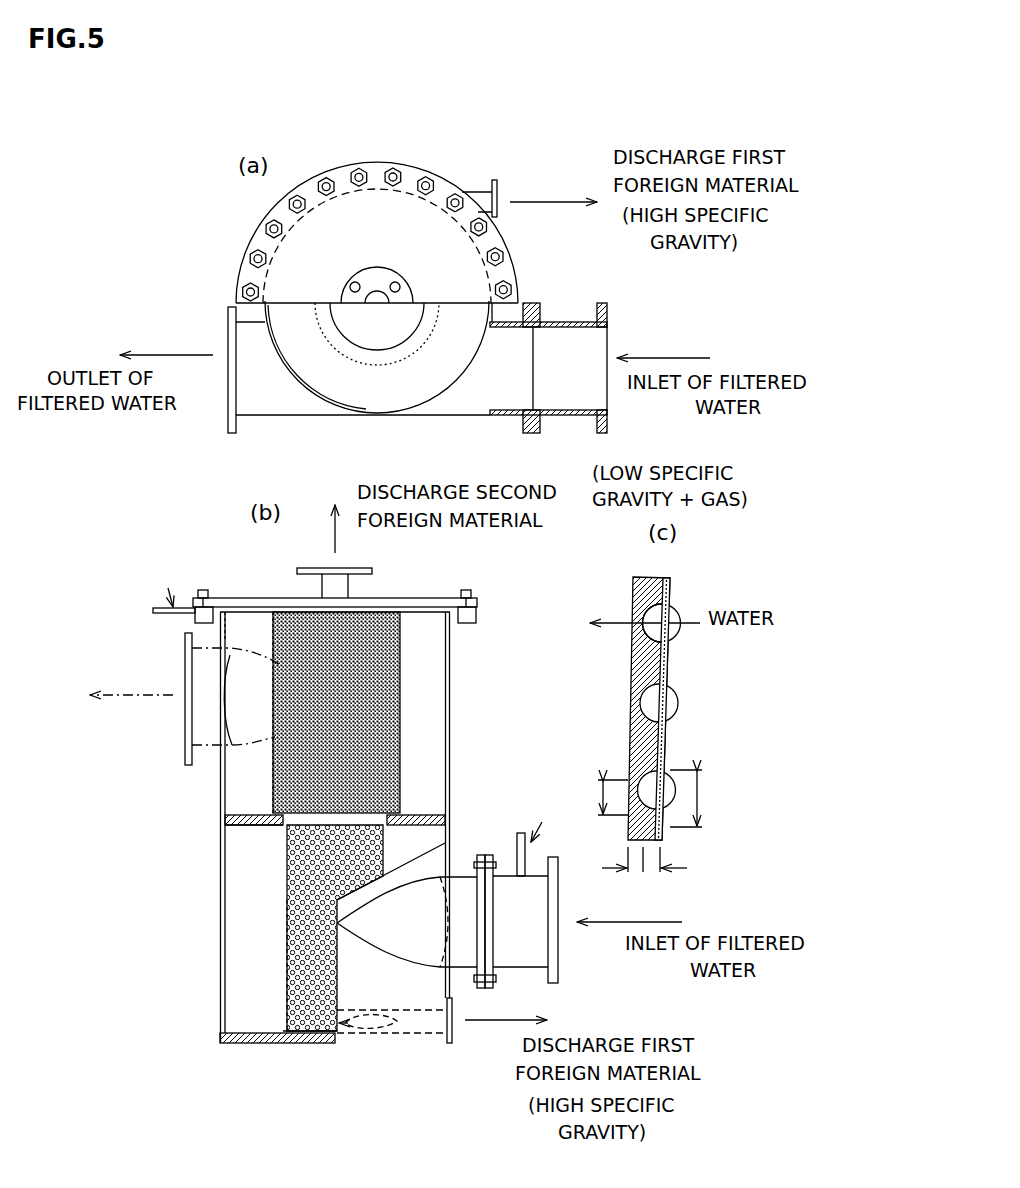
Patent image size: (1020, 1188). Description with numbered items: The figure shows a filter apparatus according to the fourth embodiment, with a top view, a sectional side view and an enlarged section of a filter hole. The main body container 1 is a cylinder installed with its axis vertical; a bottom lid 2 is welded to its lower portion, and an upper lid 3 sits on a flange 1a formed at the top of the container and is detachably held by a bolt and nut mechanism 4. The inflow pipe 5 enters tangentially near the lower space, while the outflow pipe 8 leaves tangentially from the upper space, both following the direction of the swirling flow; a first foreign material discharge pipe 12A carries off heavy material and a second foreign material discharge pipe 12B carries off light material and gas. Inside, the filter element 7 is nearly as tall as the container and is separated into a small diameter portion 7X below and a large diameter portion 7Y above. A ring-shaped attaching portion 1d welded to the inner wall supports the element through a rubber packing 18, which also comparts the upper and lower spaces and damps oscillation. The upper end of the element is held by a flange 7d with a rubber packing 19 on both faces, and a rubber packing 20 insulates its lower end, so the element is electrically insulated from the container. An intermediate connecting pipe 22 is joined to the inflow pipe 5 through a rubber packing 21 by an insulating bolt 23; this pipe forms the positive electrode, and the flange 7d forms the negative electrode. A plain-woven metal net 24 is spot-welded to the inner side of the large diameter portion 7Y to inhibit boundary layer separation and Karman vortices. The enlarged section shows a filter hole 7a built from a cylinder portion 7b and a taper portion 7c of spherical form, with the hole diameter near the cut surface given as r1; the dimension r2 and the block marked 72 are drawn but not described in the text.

The main body container 1 is at (213, 1007).
The flange 1a is at (477, 613).
The attaching portion 1d is at (240, 828).
The bottom lid 2 is at (257, 1045).
The upper lid 3 is at (253, 598).
The bolt and nut mechanism 4 is at (420, 172).
The inflow pipe 5 is at (505, 416).
The filter element 7 is at (434, 345).
The filter hole 7a is at (627, 705).
The cylinder portion 7b is at (614, 856).
The taper portion 7c is at (680, 856).
The flange 7d is at (225, 602).
The small diameter portion 7X is at (281, 943).
The large diameter portion 7Y is at (272, 787).
The outflow pipe 8 is at (257, 417).
The first foreign material discharge pipe 12A is at (480, 197).
The second foreign material discharge pipe 12B is at (387, 271).
The rubber packing 18 is at (285, 828).
The rubber packing 19 is at (157, 608).
The rubber packing 20 is at (313, 1044).
The rubber packing 21 is at (487, 989).
The intermediate connecting pipe 22 is at (530, 969).
The insulating bolt 23 is at (498, 855).
The metal net 24 is at (670, 663).
The perforated filter block 72 is at (285, 866).
The hole diameter r1 is at (697, 798).
The cavity radius r2 is at (600, 795).